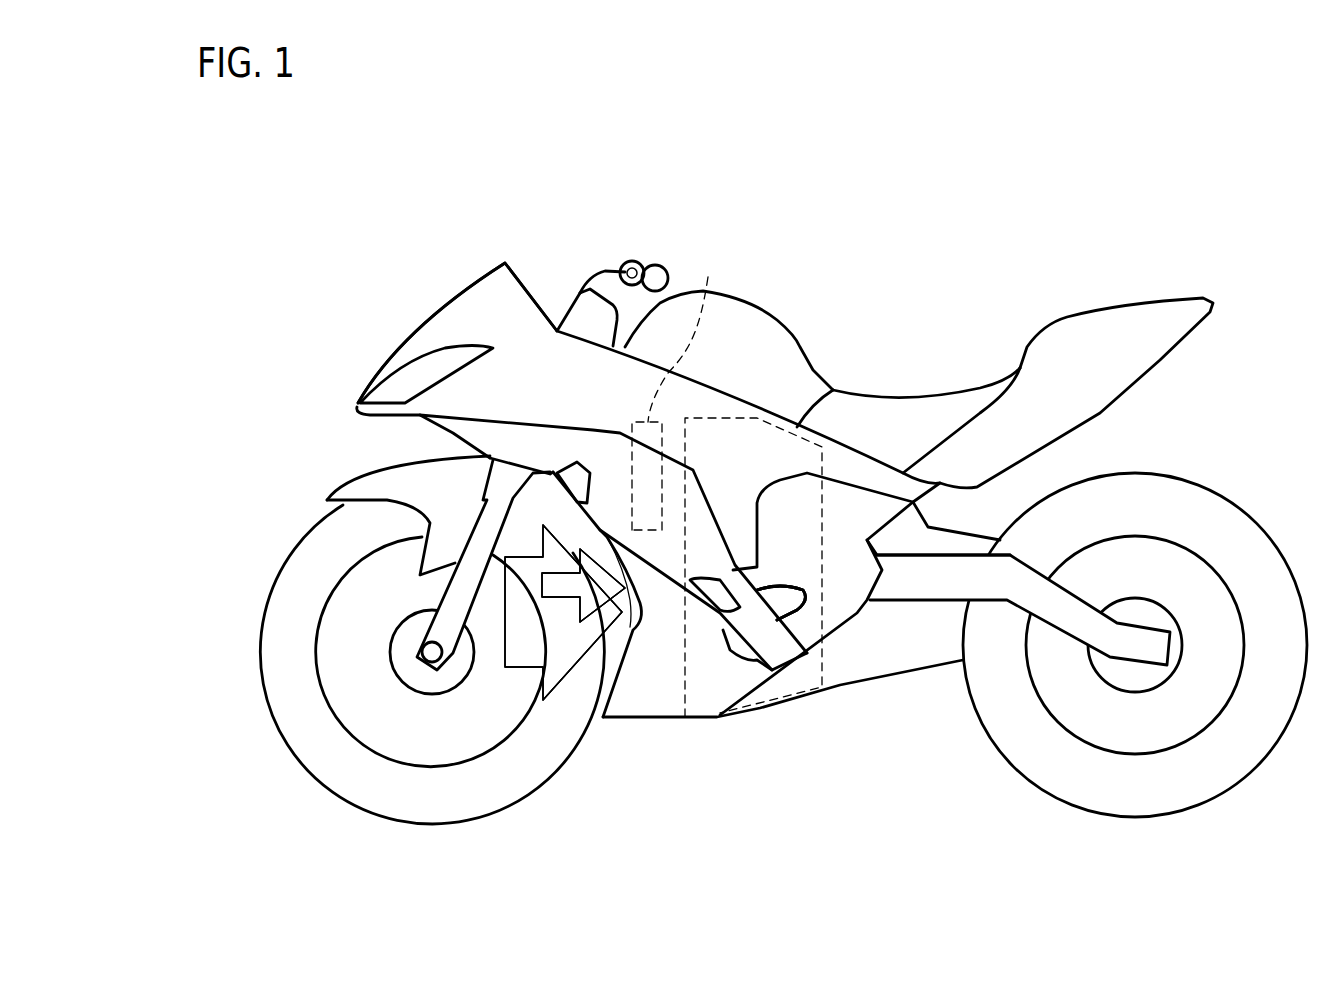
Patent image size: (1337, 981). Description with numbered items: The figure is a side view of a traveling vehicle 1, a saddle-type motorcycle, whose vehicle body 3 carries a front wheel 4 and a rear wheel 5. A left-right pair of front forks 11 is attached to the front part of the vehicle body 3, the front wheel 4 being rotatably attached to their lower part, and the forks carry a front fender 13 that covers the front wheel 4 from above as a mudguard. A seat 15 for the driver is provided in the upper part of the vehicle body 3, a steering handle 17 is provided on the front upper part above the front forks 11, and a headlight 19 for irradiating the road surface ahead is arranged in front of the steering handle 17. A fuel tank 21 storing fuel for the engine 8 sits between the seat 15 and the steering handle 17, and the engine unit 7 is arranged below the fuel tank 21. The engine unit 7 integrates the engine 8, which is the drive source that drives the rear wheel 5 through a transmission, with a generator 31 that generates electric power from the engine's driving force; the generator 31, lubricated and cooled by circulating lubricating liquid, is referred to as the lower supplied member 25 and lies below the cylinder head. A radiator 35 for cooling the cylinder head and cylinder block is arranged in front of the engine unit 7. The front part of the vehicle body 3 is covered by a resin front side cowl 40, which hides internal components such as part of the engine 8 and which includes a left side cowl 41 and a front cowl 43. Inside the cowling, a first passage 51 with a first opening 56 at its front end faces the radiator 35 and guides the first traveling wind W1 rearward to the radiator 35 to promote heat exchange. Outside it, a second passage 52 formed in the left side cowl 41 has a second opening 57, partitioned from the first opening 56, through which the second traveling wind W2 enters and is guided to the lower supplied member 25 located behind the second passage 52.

The vehicle 1 is at (337, 259).
The vehicle body 3 is at (860, 330).
The front wheel 4 is at (333, 780).
The rear wheel 5 is at (1217, 780).
The engine unit 7 is at (685, 677).
The engine 8 is at (742, 648).
The front forks 11 is at (450, 597).
The front fender 13 is at (337, 497).
The seat 15 is at (907, 407).
The steering handle 17 is at (652, 268).
The headlight 19 is at (383, 388).
The fuel tank 21 is at (773, 335).
The lower supplied member 25 is at (811, 716).
The generator 31 is at (773, 603).
The radiator 35 is at (681, 383).
The front side cowl 40 is at (553, 297).
The left side cowl 41 is at (470, 433).
The front cowl 43 is at (465, 302).
The first passage 51 is at (583, 704).
The second passage 52 is at (544, 710).
The first opening 56 is at (621, 638).
The second opening 57 is at (613, 596).
The first traveling wind W1 is at (615, 598).
The second traveling wind W2 is at (615, 592).